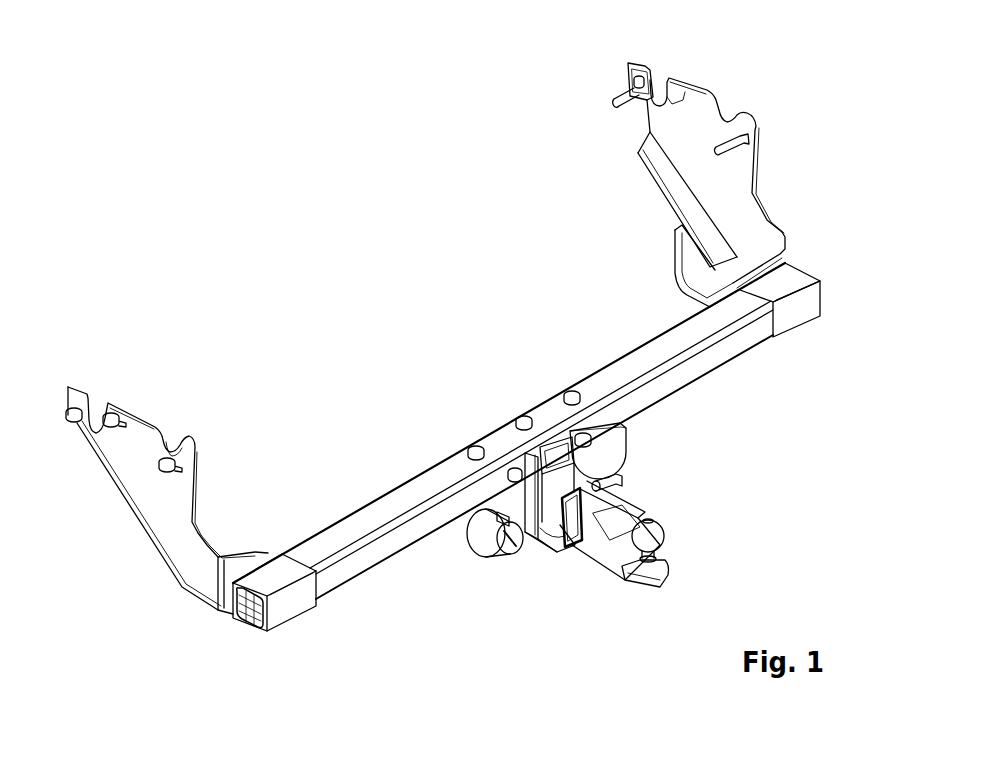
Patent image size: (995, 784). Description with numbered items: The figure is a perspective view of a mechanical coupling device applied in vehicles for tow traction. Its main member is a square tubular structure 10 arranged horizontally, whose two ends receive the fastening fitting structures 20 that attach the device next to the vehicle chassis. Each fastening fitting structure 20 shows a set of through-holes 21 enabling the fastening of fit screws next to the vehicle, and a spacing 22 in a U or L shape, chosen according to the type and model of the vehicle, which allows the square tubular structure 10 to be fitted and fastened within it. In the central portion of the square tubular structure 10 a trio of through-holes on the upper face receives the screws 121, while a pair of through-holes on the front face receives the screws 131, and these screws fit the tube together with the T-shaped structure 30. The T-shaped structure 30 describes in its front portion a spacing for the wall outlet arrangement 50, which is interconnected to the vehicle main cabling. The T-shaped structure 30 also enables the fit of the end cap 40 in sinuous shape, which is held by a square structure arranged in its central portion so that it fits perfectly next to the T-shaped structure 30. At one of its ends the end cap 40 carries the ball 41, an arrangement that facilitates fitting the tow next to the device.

The square tubular structure 10 is at (645, 343).
The fastening fitting structure 20 is at (697, 83).
The through-holes 21 is at (634, 109).
The spacing 22 is at (797, 308).
The T-shaped structure 30 is at (626, 450).
The end cap 40 is at (603, 560).
The ball 41 is at (667, 534).
The wall outlet arrangement 50 is at (490, 558).
The screws 121 is at (517, 401).
The screws 131 is at (588, 440).